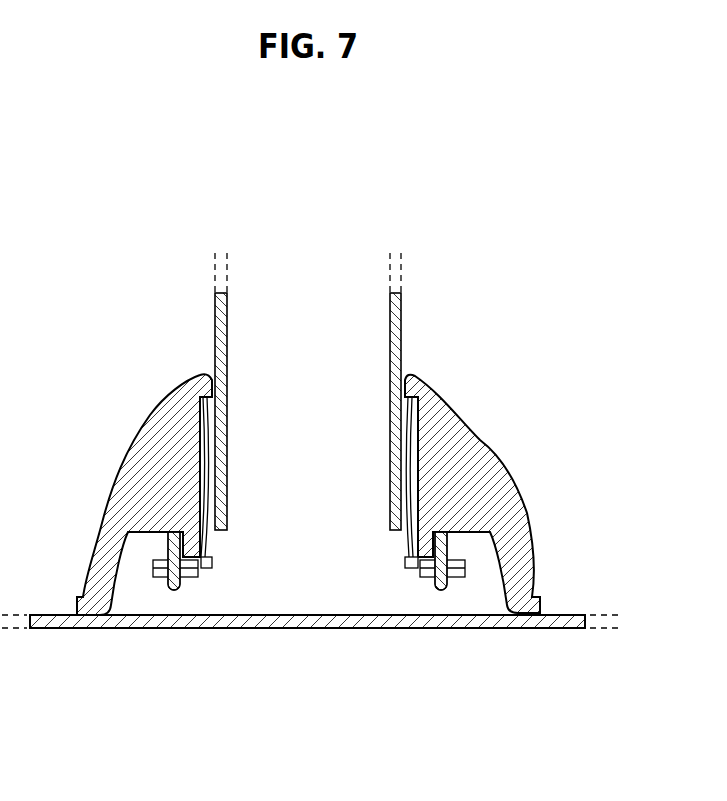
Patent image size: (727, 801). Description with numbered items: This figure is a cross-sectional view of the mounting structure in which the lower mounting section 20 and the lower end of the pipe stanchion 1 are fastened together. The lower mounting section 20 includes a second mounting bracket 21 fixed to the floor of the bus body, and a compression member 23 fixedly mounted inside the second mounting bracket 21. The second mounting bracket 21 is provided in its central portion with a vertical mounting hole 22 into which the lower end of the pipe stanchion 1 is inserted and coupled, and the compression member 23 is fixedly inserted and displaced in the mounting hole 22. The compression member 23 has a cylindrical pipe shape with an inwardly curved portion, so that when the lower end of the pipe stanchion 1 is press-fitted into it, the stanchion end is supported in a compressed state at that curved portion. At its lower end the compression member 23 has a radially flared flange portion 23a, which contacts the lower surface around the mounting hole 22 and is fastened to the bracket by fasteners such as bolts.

The pipe stanchion 1 is at (222, 322).
The lower mounting section 20 is at (507, 426).
The second mounting bracket 21 is at (483, 462).
The mounting hole 22 is at (198, 452).
The compression member 23 is at (230, 561).
The flange portion 23a is at (190, 576).